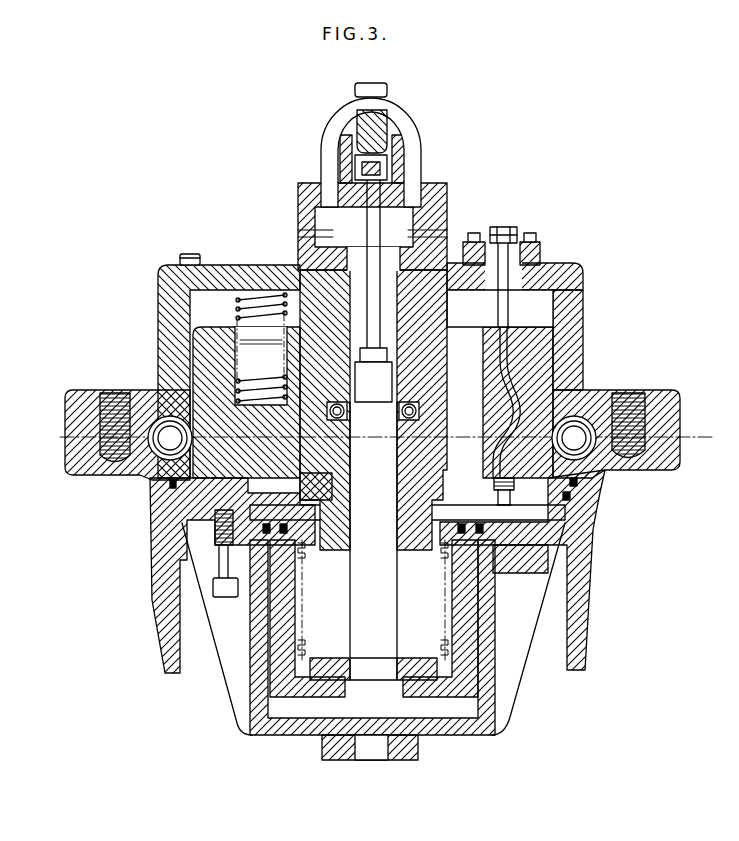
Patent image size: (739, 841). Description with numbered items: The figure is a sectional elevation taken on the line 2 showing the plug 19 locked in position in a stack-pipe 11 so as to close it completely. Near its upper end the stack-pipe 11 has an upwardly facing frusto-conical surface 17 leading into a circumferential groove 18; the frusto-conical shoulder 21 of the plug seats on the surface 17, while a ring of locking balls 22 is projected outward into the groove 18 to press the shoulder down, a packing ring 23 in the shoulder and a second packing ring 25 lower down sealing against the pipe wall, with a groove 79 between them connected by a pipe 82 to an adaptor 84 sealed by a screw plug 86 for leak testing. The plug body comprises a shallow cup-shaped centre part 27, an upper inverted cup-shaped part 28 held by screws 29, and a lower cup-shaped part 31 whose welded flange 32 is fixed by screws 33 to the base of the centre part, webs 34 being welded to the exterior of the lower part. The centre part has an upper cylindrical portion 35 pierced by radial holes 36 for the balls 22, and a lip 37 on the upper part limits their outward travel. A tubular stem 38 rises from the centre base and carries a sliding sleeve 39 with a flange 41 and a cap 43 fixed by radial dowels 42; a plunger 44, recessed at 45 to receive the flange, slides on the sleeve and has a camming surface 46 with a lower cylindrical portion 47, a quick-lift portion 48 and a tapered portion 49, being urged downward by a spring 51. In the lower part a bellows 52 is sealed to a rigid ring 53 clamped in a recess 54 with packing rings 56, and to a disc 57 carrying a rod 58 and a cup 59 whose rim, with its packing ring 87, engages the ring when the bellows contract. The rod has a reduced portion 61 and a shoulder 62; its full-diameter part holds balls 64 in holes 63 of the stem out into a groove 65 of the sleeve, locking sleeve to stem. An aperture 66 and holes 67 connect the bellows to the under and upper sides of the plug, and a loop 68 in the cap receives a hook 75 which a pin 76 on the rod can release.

The section line 2 is at (695, 425).
The stack-pipe 11 is at (590, 578).
The frusto-conical surface 17 is at (585, 458).
The circumferential groove 18 is at (625, 395).
The plug 19 is at (597, 331).
The frusto-conical shoulder 21 is at (567, 488).
The locking balls 22 is at (580, 420).
The packing ring 23 is at (577, 470).
The packing ring 25 is at (560, 497).
The centre part 27 is at (172, 488).
The upper cup-shaped part 28 is at (580, 270).
The screws 29 is at (188, 253).
The lower cup-shaped part 31 is at (490, 670).
The flange 32 is at (565, 585).
The screws 33 is at (225, 597).
The webs 34 is at (235, 680).
The upper cylindrical portion 35 is at (165, 460).
The radial holes 36 is at (185, 400).
The lip 37 is at (150, 425).
The tubular stem 38 is at (440, 245).
The sleeve 39 is at (428, 351).
The flange 41 is at (470, 468).
The radial dowels 42 is at (440, 222).
The cap 43 is at (447, 188).
The plunger 44 is at (570, 320).
The recess 45 is at (305, 488).
The camming surface 46 is at (493, 415).
The lower cylindrical portion 47 is at (500, 478).
The quick-lift portion 48 is at (495, 430).
The tapered portion 49 is at (500, 395).
The spring 51 is at (240, 305).
The bellows 52 is at (452, 622).
The rigid ring 53 is at (505, 560).
The recess 54 is at (440, 525).
The packing rings 56 is at (270, 522).
The disc 57 is at (420, 700).
The rod 58 is at (380, 615).
The cup 59 is at (296, 560).
The reduced portion 61 is at (373, 375).
The frusto-conical shoulder 62 is at (399, 406).
The radial holes 63 is at (392, 440).
The balls 64 is at (330, 408).
The internal circumferential groove 65 is at (330, 420).
The central aperture 66 is at (378, 750).
The holes 67 is at (430, 512).
The loop 68 is at (402, 133).
The hook 75 is at (355, 122).
The pin 76 is at (374, 228).
The groove 79 is at (495, 448).
The pipe 82 is at (500, 313).
The adaptor 84 is at (515, 245).
The screw plug 86 is at (505, 228).
The packing ring 87 is at (470, 568).